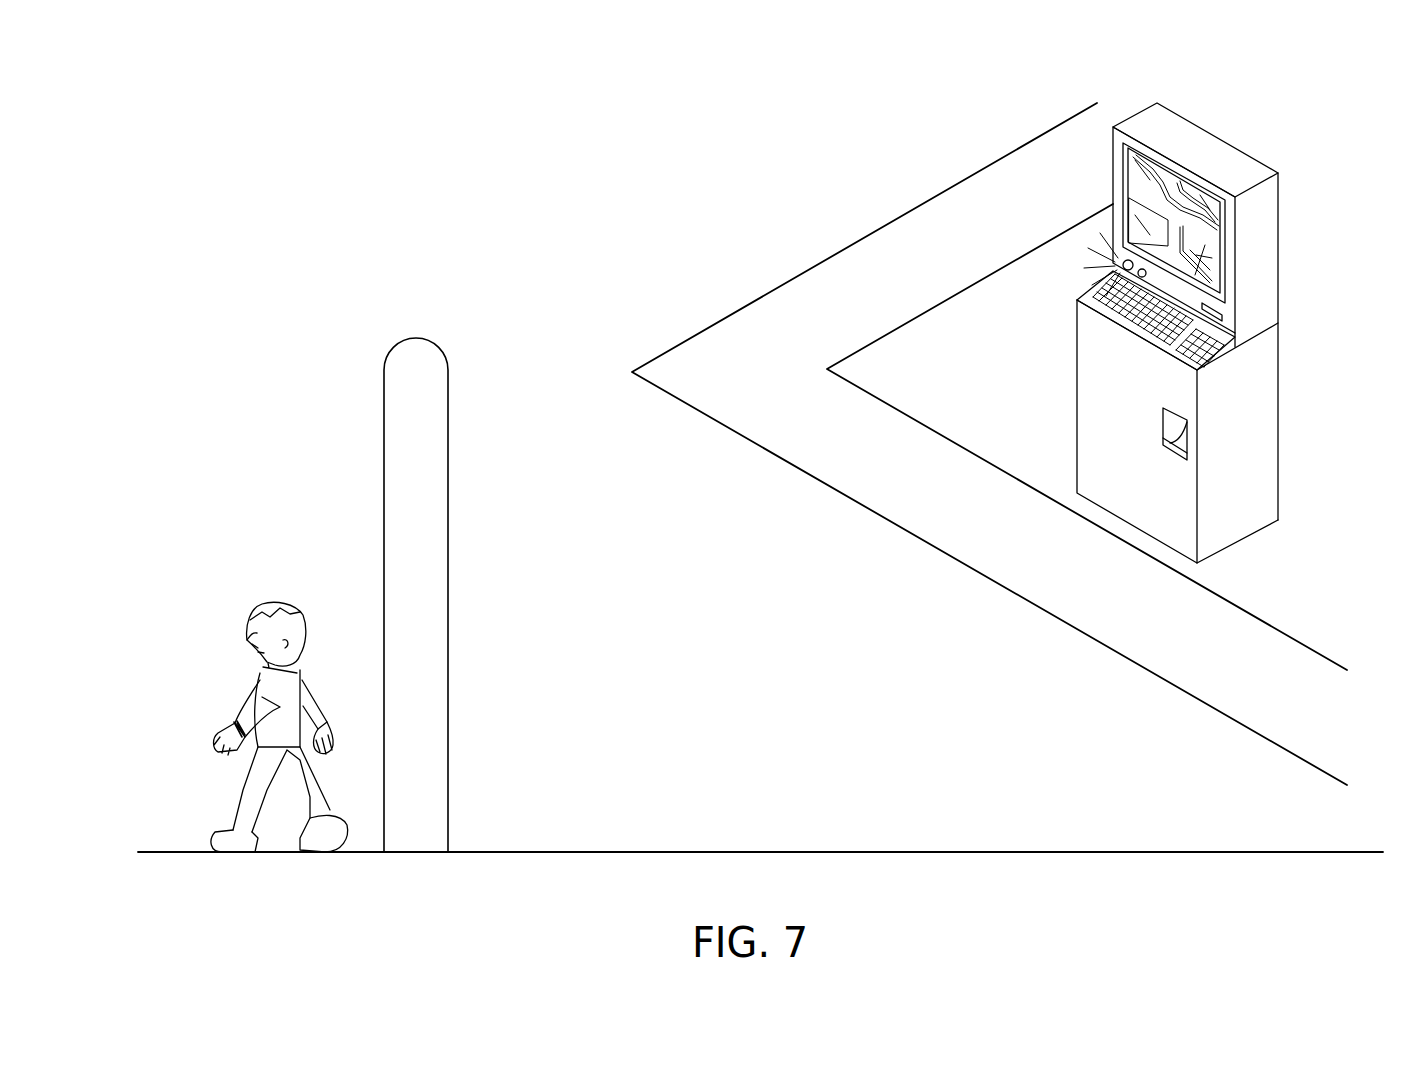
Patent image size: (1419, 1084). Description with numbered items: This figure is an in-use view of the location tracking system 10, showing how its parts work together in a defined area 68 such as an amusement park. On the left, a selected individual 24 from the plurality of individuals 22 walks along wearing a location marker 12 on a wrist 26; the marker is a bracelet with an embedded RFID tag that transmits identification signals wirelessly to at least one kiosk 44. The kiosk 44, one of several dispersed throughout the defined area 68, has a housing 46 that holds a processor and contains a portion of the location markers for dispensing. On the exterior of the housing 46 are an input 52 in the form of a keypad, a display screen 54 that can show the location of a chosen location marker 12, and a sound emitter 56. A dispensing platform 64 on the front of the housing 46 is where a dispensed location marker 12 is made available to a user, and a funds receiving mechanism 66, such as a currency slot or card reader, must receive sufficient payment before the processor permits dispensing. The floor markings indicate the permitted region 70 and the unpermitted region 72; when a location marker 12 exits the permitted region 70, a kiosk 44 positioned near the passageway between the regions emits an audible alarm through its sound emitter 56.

The location tracking system 10 is at (300, 200).
The location marker 12 is at (237, 727).
The plurality of individuals 22 is at (268, 578).
The selected individual 24 is at (287, 623).
The wrist 26 is at (213, 753).
The kiosk 44 is at (1243, 112).
The housing 46 is at (1250, 383).
The input 52 is at (1082, 326).
The display screen 54 is at (1220, 226).
The sound emitter 56 is at (1122, 262).
The dispensing platform 64 is at (1185, 441).
The funds receiving mechanism 66 is at (1225, 317).
The defined area 68 is at (652, 300).
The permitted region 70 is at (586, 692).
The unpermitted region 72 is at (272, 418).